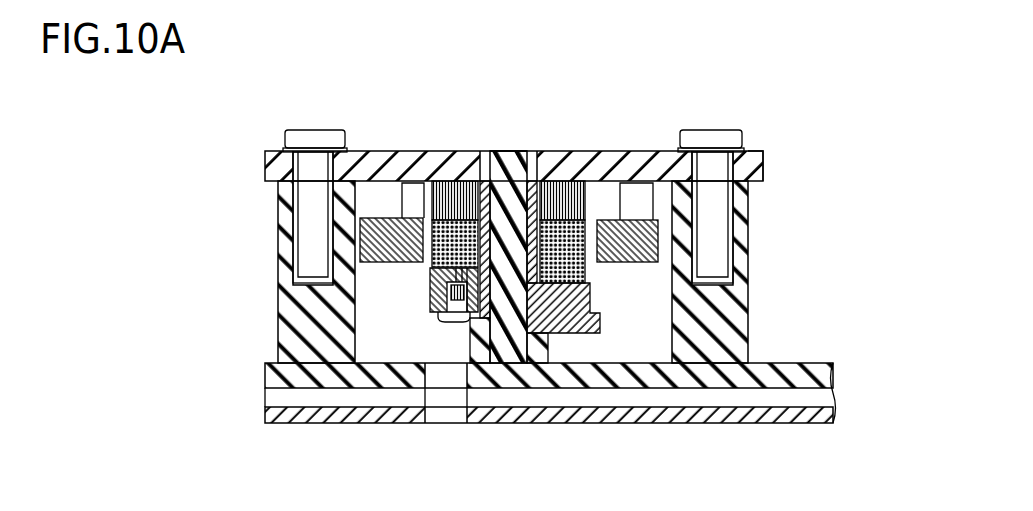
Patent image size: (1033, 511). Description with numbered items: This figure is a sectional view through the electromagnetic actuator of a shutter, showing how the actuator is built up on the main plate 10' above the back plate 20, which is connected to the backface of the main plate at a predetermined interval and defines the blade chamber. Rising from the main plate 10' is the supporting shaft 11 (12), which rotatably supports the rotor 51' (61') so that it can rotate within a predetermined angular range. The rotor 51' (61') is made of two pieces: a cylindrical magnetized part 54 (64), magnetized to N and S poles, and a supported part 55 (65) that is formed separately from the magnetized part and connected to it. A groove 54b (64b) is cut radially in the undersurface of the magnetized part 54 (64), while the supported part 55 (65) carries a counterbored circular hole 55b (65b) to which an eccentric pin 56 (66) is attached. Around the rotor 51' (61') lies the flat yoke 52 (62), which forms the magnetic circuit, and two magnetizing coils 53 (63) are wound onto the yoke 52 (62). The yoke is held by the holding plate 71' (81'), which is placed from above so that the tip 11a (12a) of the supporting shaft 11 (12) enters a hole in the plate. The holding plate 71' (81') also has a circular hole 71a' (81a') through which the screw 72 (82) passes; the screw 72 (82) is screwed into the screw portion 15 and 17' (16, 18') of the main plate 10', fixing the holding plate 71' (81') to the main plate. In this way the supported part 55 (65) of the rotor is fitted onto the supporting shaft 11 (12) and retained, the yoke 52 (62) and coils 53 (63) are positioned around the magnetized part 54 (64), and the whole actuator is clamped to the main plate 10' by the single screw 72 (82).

The main plate 10' is at (670, 323).
The supporting shaft 11 is at (516, 308).
The supporting shaft 12 is at (500, 287).
The tip of the supporting shaft 11a is at (542, 91).
The tip of the supporting shaft 12a is at (512, 151).
The screw portion 15 is at (759, 272).
The screw portion 16 is at (749, 291).
The screw portion 17' is at (272, 272).
The screw portion 18' is at (272, 272).
The back plate 20 is at (767, 425).
The rotor 51' is at (381, 158).
The rotor 61' is at (381, 158).
The yoke 52 is at (509, 266).
The yoke 62 is at (385, 264).
The magnetizing coil 53 is at (582, 173).
The magnetizing coil 63 is at (565, 178).
The magnetized part 54 is at (453, 142).
The magnetized part 64 is at (432, 180).
The groove 54b is at (388, 381).
The groove 64b is at (436, 300).
The supported part 55 is at (478, 181).
The supported part 65 is at (480, 186).
The circular hole 55b is at (418, 381).
The circular hole 65b is at (447, 273).
The eccentric pin 56 is at (460, 389).
The eccentric pin 66 is at (447, 322).
The holding plate 71' is at (514, 138).
The holding plate 81' is at (514, 138).
The circular hole 71a' is at (798, 170).
The circular hole 81a' is at (798, 170).
The screw 72 is at (515, 176).
The screw 82 is at (306, 131).